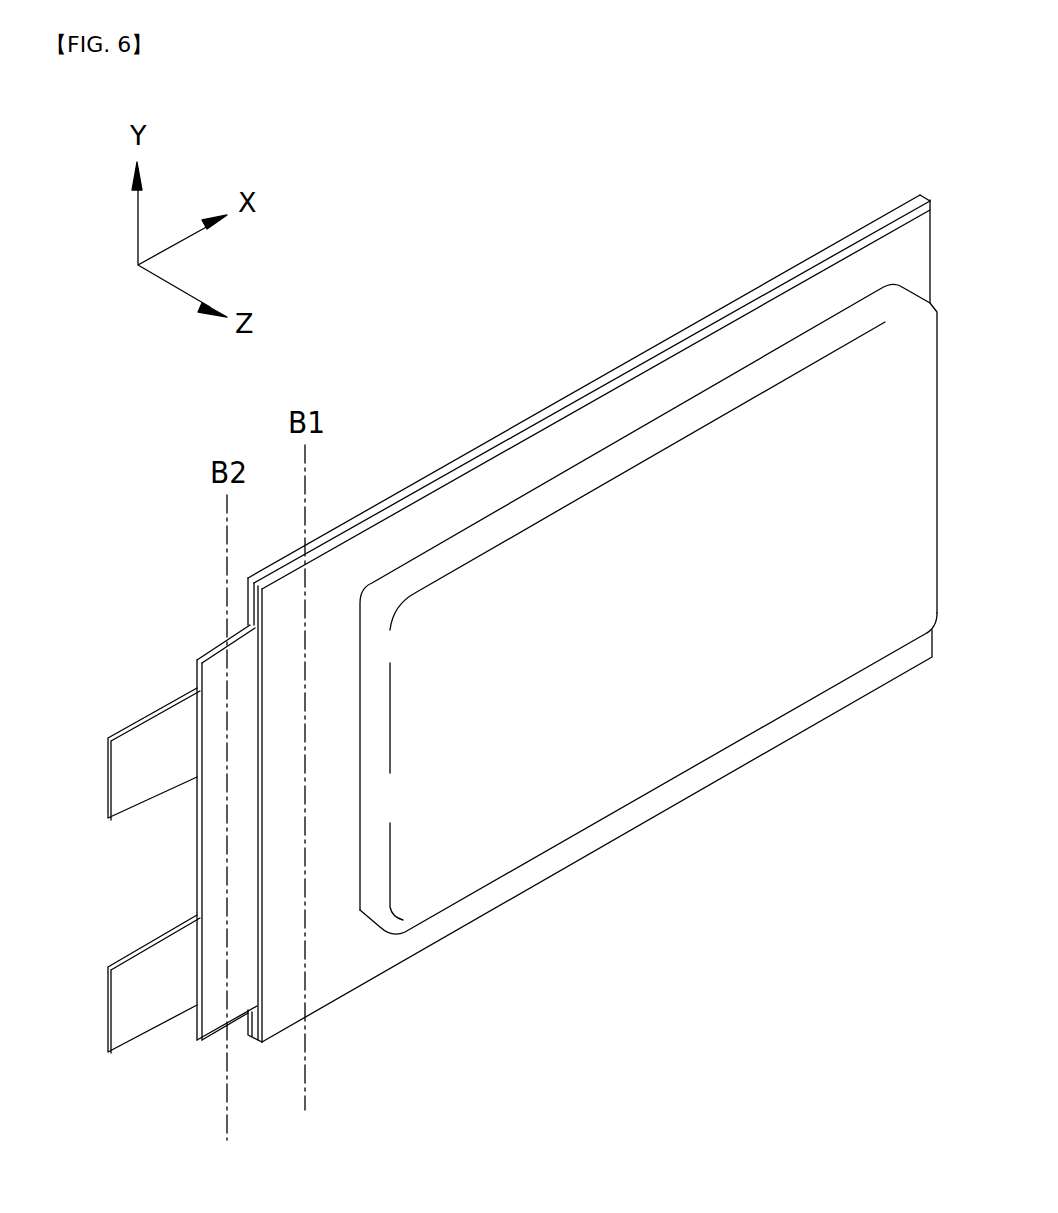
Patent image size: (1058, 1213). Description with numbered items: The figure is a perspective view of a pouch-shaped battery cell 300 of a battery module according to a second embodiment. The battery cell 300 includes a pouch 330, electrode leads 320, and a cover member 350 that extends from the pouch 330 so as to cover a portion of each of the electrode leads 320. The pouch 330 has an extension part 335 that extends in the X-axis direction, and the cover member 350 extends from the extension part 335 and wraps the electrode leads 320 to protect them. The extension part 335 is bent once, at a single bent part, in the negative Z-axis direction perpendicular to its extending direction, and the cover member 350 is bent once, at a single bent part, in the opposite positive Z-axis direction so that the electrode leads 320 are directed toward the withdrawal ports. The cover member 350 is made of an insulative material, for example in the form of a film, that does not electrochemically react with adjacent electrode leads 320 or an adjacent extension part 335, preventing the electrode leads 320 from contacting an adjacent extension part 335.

The battery cell 300 is at (90, 449).
The electrode leads 320 is at (130, 788).
The pouch 330 is at (687, 392).
The extension part 335 is at (273, 1013).
The cover member 350 is at (207, 670).